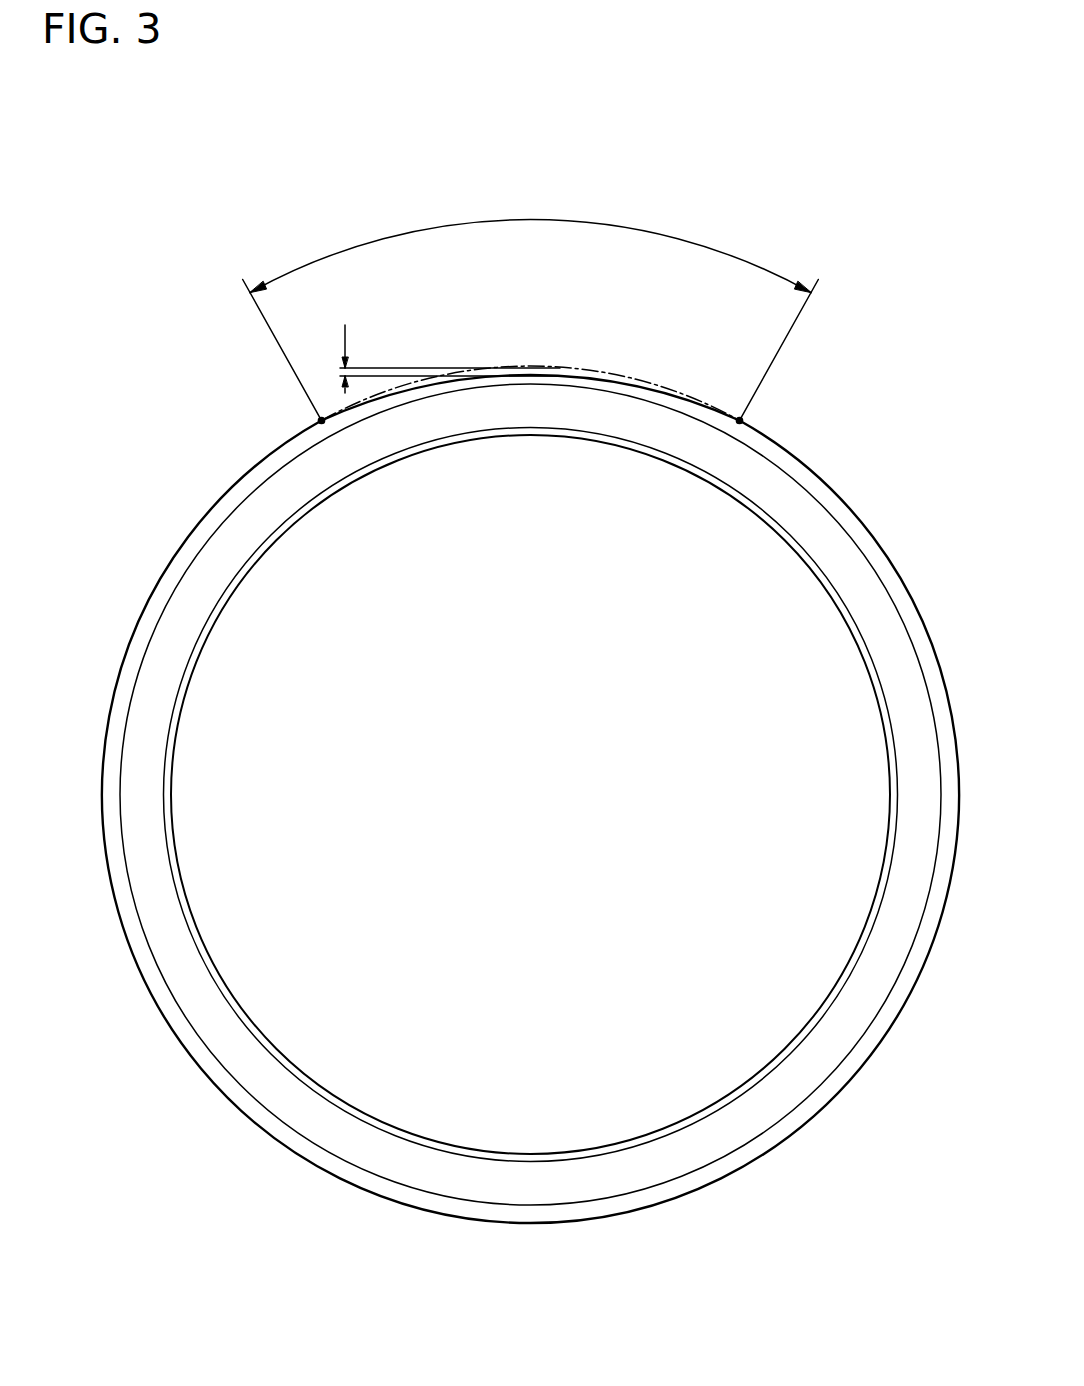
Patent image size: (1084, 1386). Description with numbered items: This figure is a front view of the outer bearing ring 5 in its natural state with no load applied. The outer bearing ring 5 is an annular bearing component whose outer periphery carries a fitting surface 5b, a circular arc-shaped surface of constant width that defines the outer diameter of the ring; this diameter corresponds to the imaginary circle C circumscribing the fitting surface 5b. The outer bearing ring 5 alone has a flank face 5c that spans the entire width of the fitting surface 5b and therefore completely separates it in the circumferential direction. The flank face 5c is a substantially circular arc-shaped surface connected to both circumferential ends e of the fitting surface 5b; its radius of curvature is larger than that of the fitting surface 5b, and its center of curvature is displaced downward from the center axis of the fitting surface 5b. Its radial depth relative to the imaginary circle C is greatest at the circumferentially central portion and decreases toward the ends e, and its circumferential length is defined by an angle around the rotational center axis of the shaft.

The outer bearing ring 5 is at (820, 536).
The fitting surface 5b is at (173, 557).
The flank face 5c is at (560, 374).
The circumferential ends of the fitting surface e is at (322, 420).
The imaginary circle C is at (545, 367).